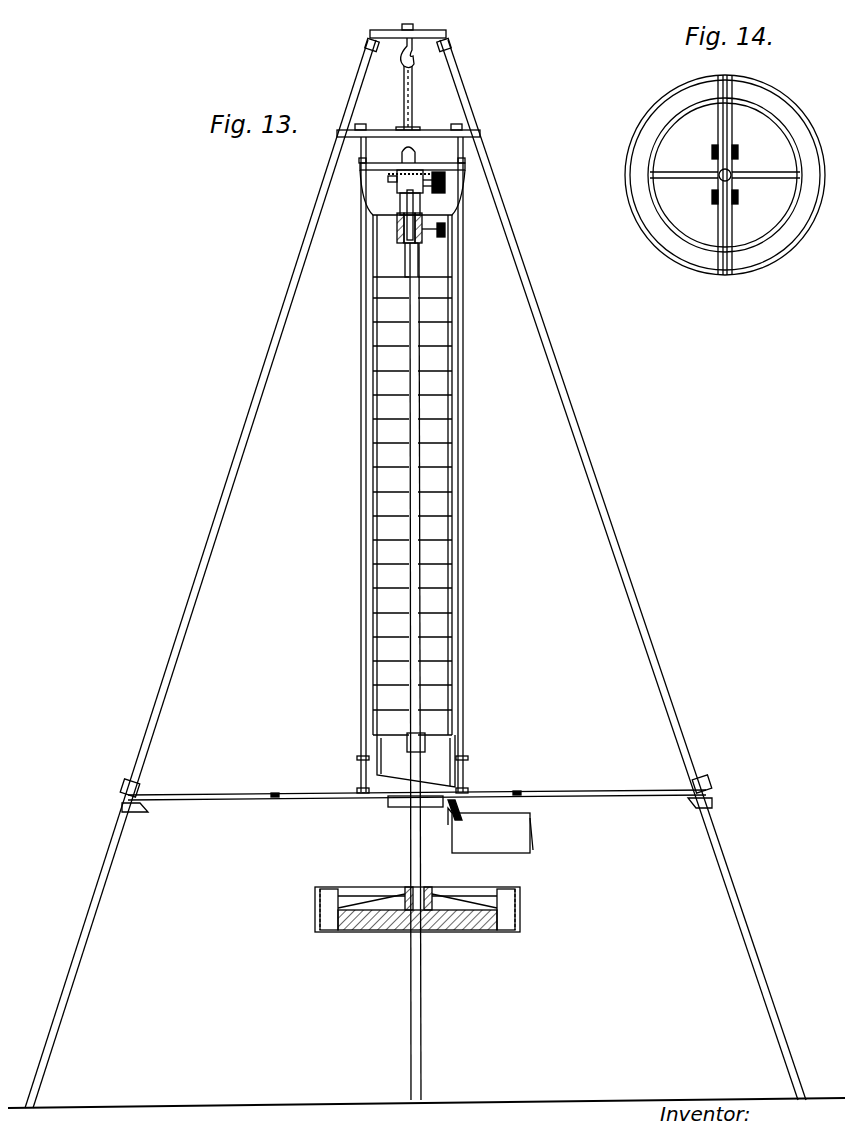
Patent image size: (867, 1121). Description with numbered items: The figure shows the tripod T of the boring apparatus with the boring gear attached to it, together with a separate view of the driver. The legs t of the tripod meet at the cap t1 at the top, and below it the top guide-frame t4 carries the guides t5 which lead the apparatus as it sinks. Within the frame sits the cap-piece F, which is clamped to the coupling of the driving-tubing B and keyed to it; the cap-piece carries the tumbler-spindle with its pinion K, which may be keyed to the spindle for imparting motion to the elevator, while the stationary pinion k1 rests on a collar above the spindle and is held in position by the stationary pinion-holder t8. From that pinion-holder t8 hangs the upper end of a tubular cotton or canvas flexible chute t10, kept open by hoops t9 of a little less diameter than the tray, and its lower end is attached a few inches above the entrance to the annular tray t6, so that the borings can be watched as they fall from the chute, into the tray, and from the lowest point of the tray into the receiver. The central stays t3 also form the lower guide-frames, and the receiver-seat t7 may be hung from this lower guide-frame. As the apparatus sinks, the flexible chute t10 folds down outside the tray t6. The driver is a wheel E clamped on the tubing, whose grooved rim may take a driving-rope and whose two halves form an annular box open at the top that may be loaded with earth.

In FIG. 13, the legs of the tripod t is at (312, 240).
In FIG. 13, the tripod T is at (258, 400).
In FIG. 13, the cap t1 is at (420, 34).
In FIG. 13, the top guide-frame t4 is at (440, 134).
In FIG. 13, the stationary pinion-holder t8 is at (362, 164).
In FIG. 13, the guides t5 is at (362, 367).
In FIG. 13, the pinion K is at (416, 203).
In FIG. 13, the stationary pinion k1 is at (398, 176).
In FIG. 13, the cap-piece F is at (397, 228).
In FIG. 13, the flexible chute t10 is at (452, 428).
In FIG. 13, the hoops t9 is at (453, 558).
In FIG. 13, the driving-tubing B is at (418, 524).
In FIG. 13, the annular tray t6 is at (445, 762).
In FIG. 13, the central stays t3 is at (216, 795).
In FIG. 13, the receiver-seat t7 is at (525, 848).
In FIG. 13, the wheel E is at (500, 912).
In FIG. 14, the wheel E is at (805, 150).